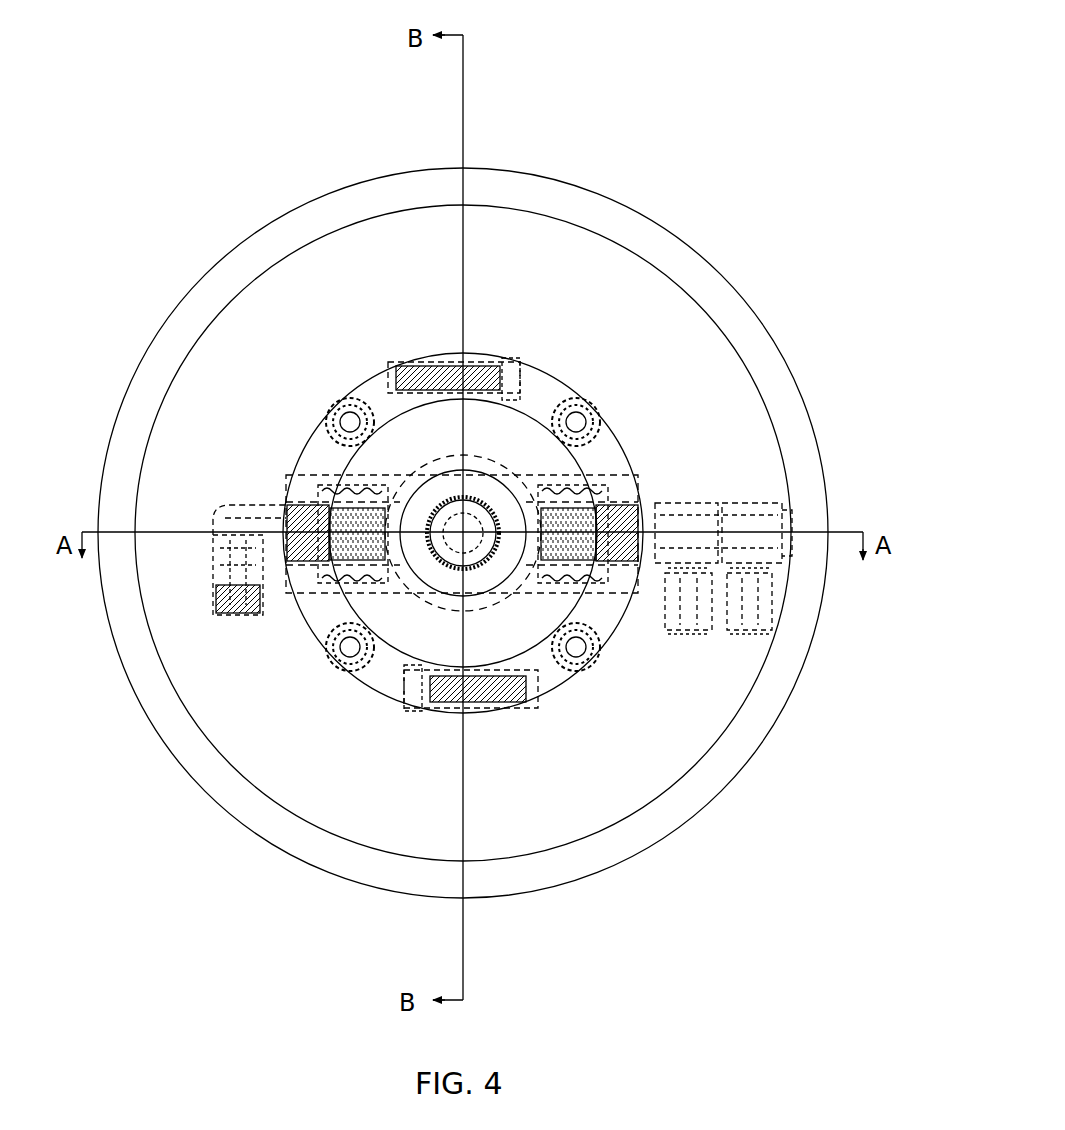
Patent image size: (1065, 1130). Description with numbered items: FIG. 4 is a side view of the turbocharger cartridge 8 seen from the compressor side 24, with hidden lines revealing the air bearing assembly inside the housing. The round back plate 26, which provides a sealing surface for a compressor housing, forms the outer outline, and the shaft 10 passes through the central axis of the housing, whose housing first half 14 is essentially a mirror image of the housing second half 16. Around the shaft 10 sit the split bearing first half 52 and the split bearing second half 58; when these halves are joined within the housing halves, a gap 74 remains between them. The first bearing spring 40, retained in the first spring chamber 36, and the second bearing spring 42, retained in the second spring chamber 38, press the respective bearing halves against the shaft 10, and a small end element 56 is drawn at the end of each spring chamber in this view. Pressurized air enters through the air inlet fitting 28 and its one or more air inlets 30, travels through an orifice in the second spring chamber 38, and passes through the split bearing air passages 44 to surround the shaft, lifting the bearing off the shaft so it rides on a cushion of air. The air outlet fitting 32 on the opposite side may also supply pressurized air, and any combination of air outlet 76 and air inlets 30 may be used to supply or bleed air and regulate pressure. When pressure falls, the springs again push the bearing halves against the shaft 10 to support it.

The turbocharger cartridge 8 is at (683, 66).
The shaft 10 is at (442, 590).
The housing first half 14 is at (372, 383).
The housing second half 16 is at (556, 682).
The compressor side 24 is at (315, 795).
The back plate 26 is at (628, 211).
The air inlet fitting 28 is at (753, 506).
The air inlets 30 is at (750, 637).
The air outlet fitting 32 is at (218, 518).
The first spring chamber 36 is at (303, 594).
The second spring chamber 38 is at (617, 600).
The first bearing spring 40 is at (343, 480).
The second bearing spring 42 is at (587, 477).
The split bearing air passages 44 is at (497, 546).
The split bearing first half 52 is at (423, 493).
The end cap 56 is at (508, 358).
The split bearing second half 58 is at (497, 580).
The gap 74 is at (463, 600).
The air outlet 76 is at (238, 623).